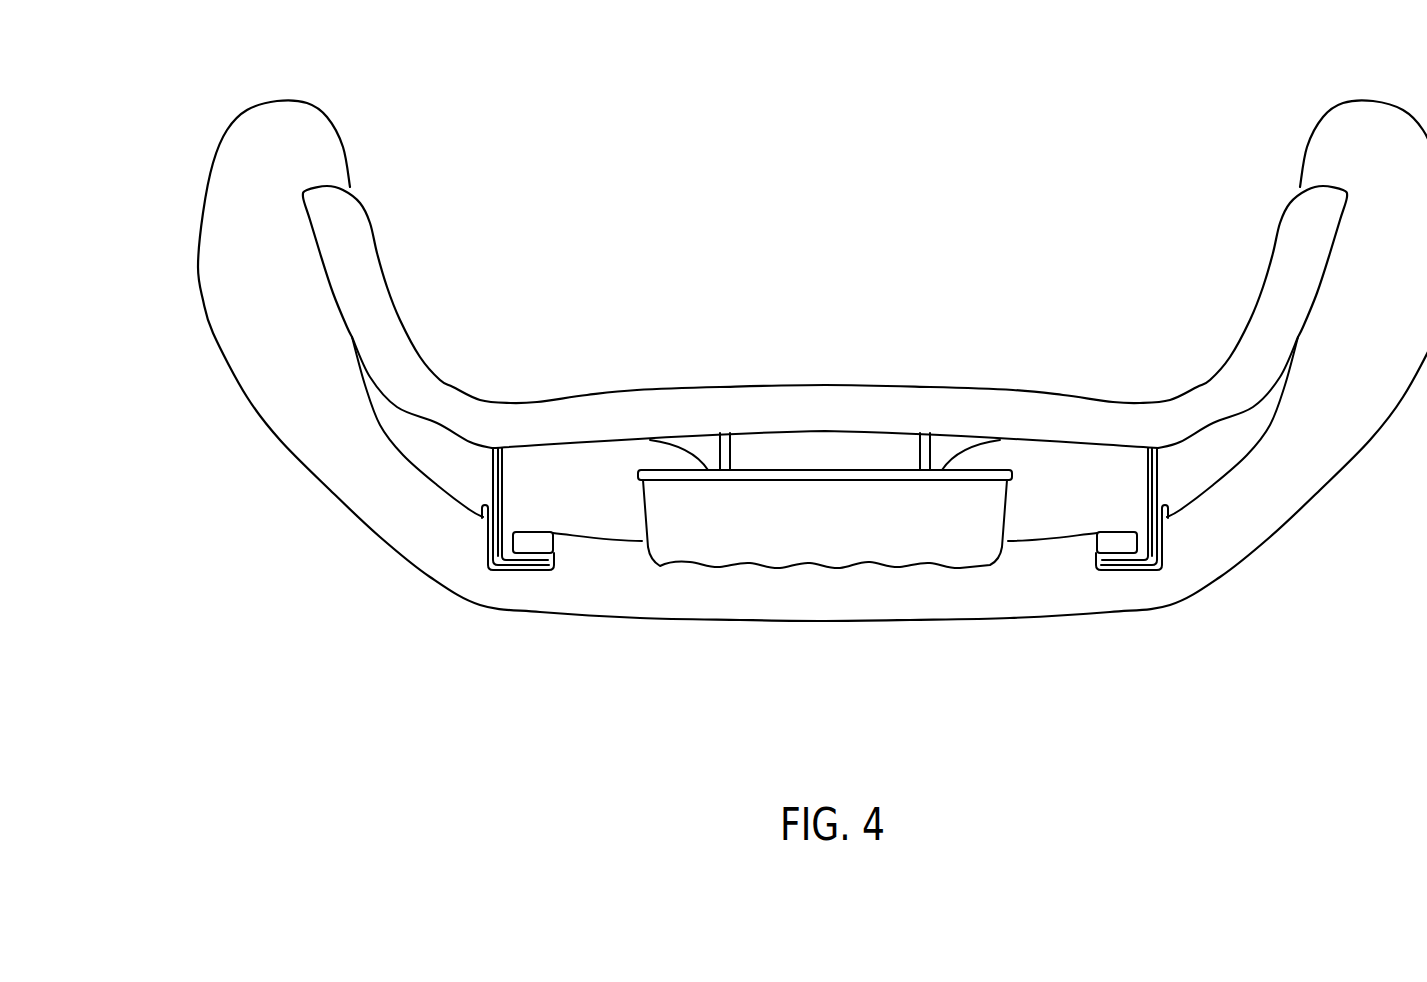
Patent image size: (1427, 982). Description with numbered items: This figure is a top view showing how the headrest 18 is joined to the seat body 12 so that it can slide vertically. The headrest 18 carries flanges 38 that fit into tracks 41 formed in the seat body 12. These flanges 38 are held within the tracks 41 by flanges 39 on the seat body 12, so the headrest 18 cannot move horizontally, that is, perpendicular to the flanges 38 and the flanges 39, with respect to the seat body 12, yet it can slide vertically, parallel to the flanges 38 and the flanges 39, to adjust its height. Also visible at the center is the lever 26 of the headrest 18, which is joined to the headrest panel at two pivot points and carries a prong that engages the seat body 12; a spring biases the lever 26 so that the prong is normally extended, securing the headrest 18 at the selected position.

The seat body 12 is at (210, 325).
The headrest 18 is at (1277, 237).
The lever 26 is at (785, 566).
The flanges 38 is at (537, 562).
The flanges 39 is at (532, 530).
The tracks 41 is at (502, 570).